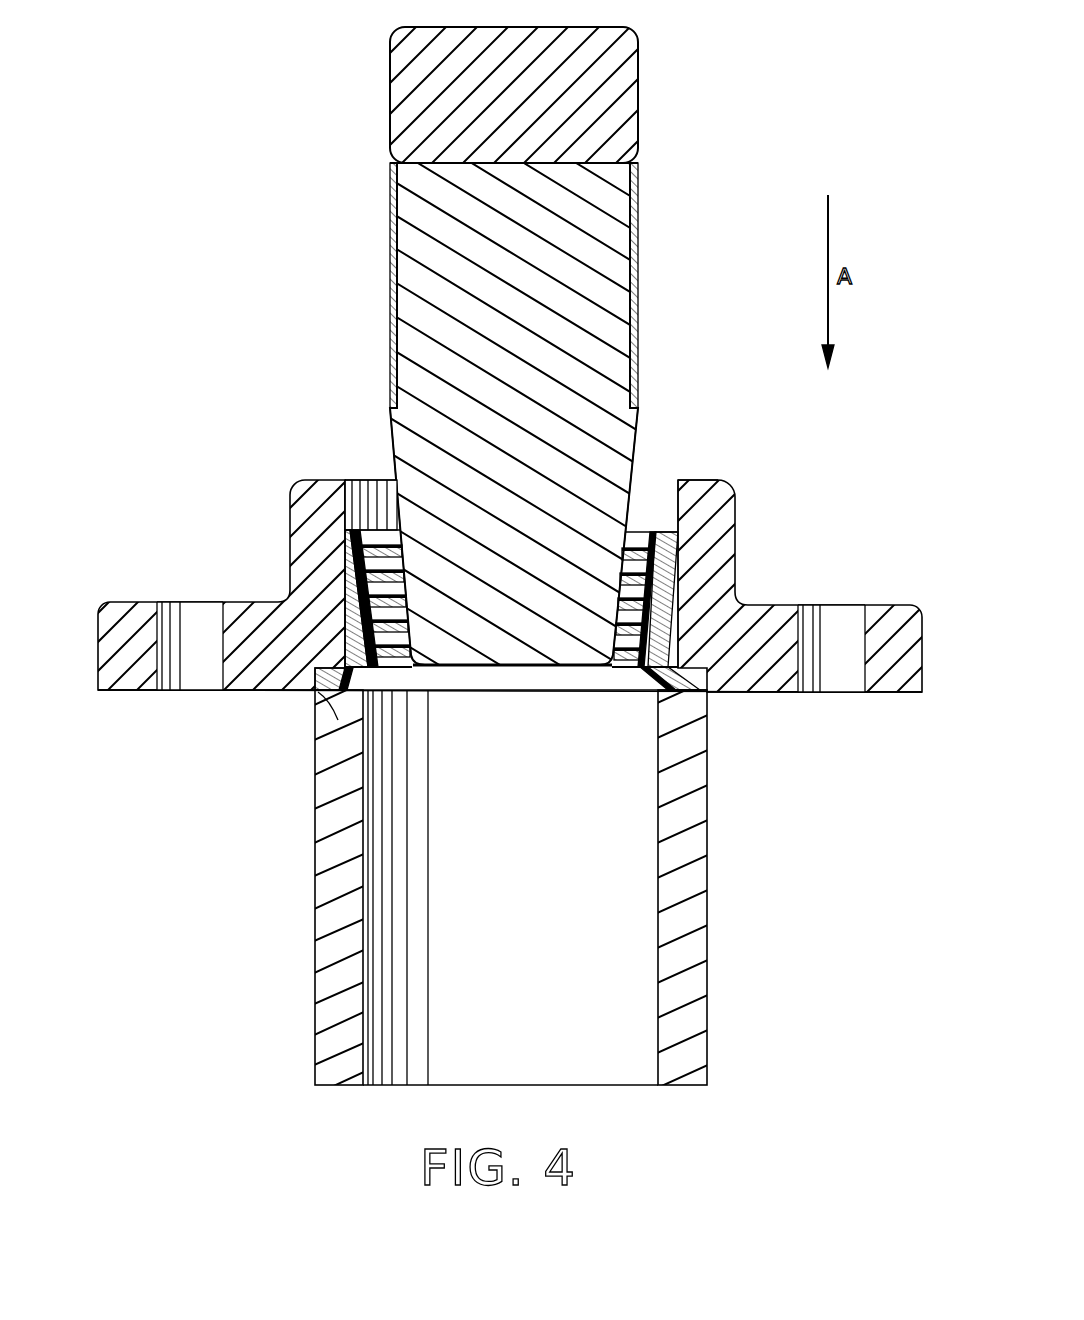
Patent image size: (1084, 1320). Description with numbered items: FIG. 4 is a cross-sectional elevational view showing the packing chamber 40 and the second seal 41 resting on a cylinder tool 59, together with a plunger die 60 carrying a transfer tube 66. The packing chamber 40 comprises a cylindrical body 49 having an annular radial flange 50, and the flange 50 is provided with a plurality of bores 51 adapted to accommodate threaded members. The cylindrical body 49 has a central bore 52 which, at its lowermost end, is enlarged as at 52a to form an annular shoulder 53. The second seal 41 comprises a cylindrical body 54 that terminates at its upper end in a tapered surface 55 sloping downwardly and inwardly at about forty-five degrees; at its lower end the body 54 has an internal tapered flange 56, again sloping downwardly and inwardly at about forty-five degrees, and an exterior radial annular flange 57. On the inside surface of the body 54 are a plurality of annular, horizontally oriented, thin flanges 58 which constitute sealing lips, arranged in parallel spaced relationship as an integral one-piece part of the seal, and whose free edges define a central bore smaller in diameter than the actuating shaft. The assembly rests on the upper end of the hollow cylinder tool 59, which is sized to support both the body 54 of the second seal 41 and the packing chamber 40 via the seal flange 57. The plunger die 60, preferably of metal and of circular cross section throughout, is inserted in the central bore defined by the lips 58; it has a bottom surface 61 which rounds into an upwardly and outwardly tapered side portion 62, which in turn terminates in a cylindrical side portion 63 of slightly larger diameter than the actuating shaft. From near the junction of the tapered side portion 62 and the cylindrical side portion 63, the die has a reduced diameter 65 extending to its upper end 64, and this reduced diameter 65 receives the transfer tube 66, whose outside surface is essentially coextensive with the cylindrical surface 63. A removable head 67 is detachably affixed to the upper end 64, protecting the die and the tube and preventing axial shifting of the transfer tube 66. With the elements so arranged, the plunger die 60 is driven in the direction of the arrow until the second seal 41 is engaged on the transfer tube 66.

The packing chamber 40 is at (896, 692).
The second seal 41 is at (648, 546).
The cylindrical body 49 is at (723, 529).
The annular radial flange 50 is at (882, 608).
The bores 51 is at (222, 618).
The central bore 52 is at (358, 517).
The enlarged bore portion 52a is at (340, 692).
The annular shoulder 53 is at (360, 708).
The cylindrical body 54 is at (676, 586).
The tapered surface 55 is at (388, 548).
The internal tapered flange 56 is at (531, 676).
The exterior radial annular flange 57 is at (690, 690).
The annular thin flanges 58 is at (347, 552).
The cylinder tool 59 is at (696, 846).
The plunger die 60 is at (602, 456).
The bottom surface 61 is at (591, 672).
The tapered side portion 62 is at (657, 481).
The cylindrical side portion 63 is at (638, 410).
The upper end 64 is at (520, 165).
The reduced diameter 65 is at (630, 264).
The transfer tube 66 is at (638, 203).
The removable head 67 is at (622, 78).